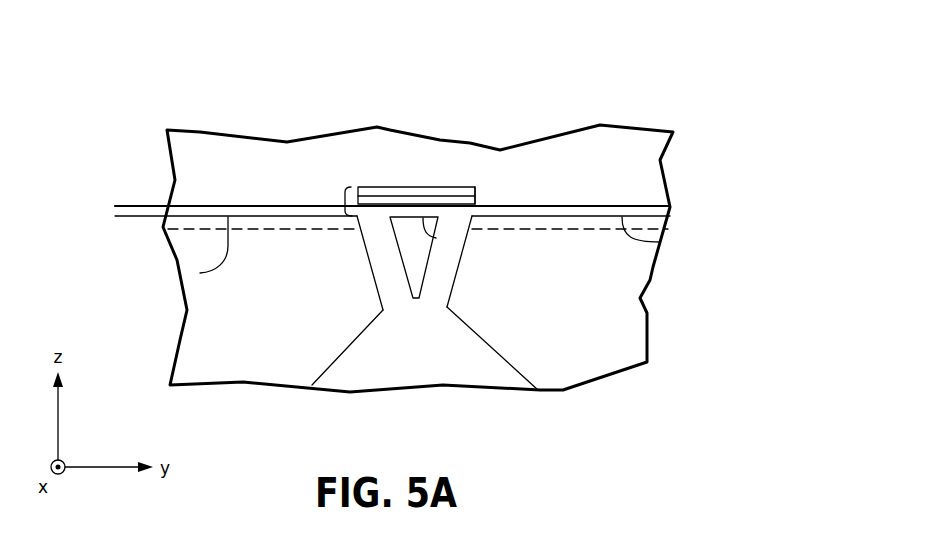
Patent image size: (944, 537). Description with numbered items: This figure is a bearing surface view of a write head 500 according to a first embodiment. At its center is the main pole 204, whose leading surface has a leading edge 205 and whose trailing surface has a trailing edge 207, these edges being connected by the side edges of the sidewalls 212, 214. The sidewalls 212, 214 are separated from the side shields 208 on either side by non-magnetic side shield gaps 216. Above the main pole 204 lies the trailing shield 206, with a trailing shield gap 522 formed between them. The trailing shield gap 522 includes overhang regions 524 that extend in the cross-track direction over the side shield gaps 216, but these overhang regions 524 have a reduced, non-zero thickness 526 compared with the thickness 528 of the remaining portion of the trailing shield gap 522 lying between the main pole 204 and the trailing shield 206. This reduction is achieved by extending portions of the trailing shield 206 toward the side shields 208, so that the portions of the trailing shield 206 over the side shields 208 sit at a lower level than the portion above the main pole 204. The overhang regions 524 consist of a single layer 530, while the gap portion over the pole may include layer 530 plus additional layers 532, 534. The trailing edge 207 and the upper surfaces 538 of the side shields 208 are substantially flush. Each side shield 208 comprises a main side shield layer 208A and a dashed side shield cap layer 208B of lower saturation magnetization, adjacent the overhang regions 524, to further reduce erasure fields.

The write head 500 is at (156, 88).
The overhang regions 524 is at (247, 215).
The thickness 528 is at (343, 203).
The trailing shield gap 522 is at (417, 215).
The additional layer 534 is at (455, 197).
The additional layer 532 is at (473, 200).
The trailing shield 206 is at (610, 185).
The layer 530 is at (662, 212).
The upper surfaces 538 is at (200, 273).
The side shields 208 is at (200, 248).
The thickness 526 is at (120, 243).
The main pole 204 is at (417, 248).
The trailing edge 207 is at (436, 238).
The sidewall 212 is at (397, 265).
The sidewall 214 is at (427, 267).
The side shield gaps 216 is at (398, 293).
The side shield cap layer 208B is at (272, 229).
The main side shield layer 208A is at (218, 352).
The leading edge 205 is at (416, 298).